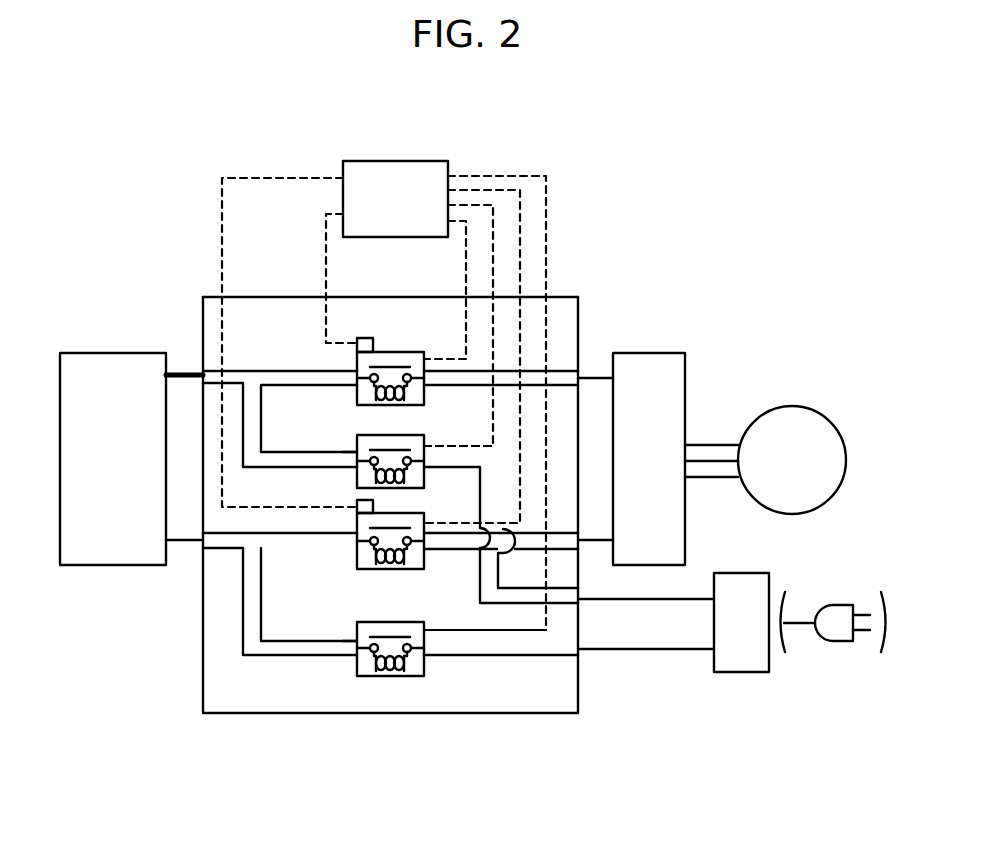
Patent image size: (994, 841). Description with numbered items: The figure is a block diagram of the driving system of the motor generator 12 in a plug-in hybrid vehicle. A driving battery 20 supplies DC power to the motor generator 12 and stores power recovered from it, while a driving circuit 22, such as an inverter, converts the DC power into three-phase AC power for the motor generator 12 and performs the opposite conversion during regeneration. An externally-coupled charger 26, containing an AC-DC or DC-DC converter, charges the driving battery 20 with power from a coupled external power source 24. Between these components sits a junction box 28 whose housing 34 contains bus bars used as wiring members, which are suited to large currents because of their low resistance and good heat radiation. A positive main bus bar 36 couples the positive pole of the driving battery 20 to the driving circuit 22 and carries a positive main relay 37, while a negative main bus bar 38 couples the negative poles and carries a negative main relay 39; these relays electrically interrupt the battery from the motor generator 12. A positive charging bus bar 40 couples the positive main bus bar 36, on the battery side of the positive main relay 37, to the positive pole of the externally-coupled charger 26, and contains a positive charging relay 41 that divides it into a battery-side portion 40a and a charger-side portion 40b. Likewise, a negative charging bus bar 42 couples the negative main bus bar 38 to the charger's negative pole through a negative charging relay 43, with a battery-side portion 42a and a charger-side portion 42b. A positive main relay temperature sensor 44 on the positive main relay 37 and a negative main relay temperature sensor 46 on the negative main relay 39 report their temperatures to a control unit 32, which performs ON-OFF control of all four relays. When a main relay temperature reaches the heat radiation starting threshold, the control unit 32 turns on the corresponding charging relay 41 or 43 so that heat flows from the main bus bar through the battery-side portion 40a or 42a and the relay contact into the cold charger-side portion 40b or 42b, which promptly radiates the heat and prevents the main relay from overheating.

The motor generator 12 is at (791, 406).
The driving battery 20 is at (110, 565).
The driving circuit 22 is at (650, 353).
The external power source 24 is at (835, 656).
The externally-coupled charger 26 is at (740, 672).
The junction box 28 is at (552, 727).
The control unit 32 is at (399, 161).
The housing 34 is at (560, 297).
The positive main bus bar 36 is at (570, 370).
The positive main relay 37 is at (357, 362).
The negative main bus bar 38 is at (570, 530).
The negative main relay 39 is at (428, 521).
The positive charging bus bar 40 is at (305, 388).
The battery-side portion 40a is at (355, 451).
The charger-side portion 40b is at (461, 447).
The positive charging relay 41 is at (357, 474).
The negative charging bus bar 42 is at (305, 578).
The battery-side portion 42a is at (355, 640).
The charger-side portion 42b is at (462, 637).
The negative charging relay 43 is at (357, 666).
The positive main relay temperature sensor 44 is at (365, 338).
The negative main relay temperature sensor 46 is at (373, 505).